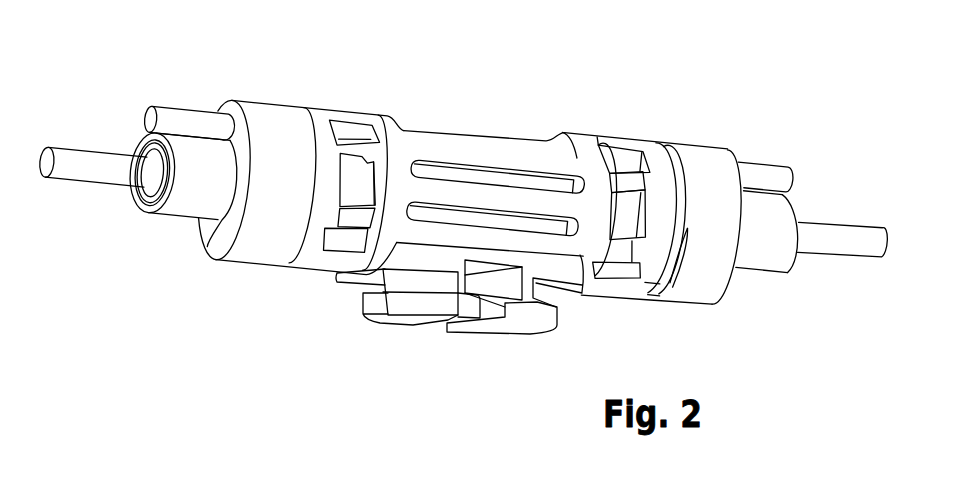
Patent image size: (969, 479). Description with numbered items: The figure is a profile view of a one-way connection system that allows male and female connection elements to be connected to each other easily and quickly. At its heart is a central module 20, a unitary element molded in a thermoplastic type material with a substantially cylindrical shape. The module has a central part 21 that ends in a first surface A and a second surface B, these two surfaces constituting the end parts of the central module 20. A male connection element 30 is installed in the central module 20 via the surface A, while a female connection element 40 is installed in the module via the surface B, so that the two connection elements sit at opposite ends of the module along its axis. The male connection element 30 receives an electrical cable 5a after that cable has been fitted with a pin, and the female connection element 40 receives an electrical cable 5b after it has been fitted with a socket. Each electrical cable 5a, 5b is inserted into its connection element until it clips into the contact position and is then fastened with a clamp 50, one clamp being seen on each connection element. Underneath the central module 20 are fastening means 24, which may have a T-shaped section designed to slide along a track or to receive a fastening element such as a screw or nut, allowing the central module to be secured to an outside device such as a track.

The electrical cable 5a is at (88, 168).
The electrical cable 5b is at (843, 243).
The central module 20 is at (508, 130).
The central part 21 is at (447, 150).
The fastening means 24 is at (428, 304).
The male connection element 30 is at (258, 93).
The female connection element 40 is at (697, 132).
The clamp 50 is at (186, 198).
The surface A is at (320, 115).
The surface B is at (603, 140).